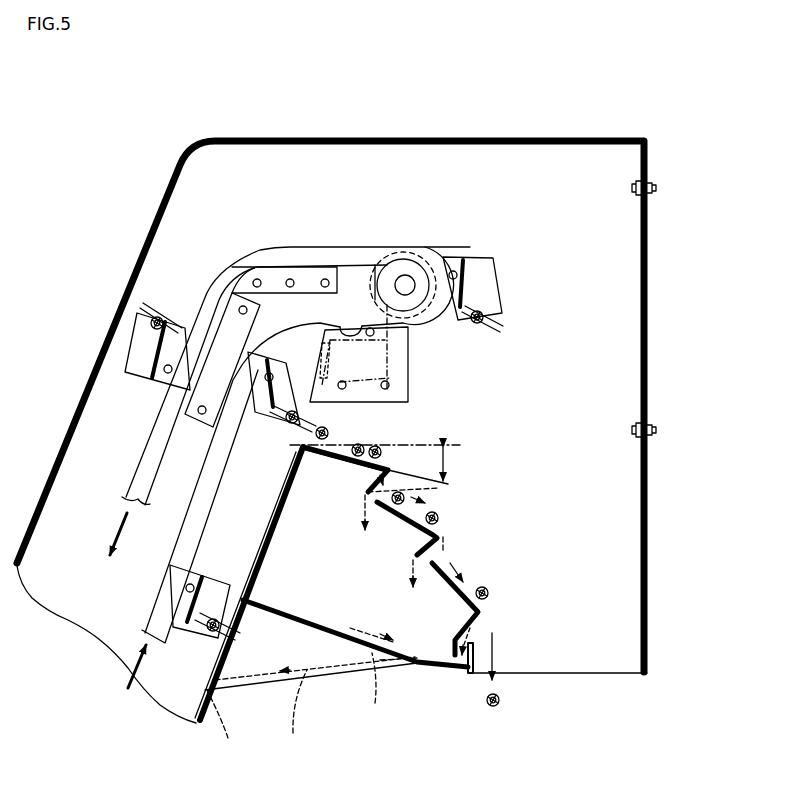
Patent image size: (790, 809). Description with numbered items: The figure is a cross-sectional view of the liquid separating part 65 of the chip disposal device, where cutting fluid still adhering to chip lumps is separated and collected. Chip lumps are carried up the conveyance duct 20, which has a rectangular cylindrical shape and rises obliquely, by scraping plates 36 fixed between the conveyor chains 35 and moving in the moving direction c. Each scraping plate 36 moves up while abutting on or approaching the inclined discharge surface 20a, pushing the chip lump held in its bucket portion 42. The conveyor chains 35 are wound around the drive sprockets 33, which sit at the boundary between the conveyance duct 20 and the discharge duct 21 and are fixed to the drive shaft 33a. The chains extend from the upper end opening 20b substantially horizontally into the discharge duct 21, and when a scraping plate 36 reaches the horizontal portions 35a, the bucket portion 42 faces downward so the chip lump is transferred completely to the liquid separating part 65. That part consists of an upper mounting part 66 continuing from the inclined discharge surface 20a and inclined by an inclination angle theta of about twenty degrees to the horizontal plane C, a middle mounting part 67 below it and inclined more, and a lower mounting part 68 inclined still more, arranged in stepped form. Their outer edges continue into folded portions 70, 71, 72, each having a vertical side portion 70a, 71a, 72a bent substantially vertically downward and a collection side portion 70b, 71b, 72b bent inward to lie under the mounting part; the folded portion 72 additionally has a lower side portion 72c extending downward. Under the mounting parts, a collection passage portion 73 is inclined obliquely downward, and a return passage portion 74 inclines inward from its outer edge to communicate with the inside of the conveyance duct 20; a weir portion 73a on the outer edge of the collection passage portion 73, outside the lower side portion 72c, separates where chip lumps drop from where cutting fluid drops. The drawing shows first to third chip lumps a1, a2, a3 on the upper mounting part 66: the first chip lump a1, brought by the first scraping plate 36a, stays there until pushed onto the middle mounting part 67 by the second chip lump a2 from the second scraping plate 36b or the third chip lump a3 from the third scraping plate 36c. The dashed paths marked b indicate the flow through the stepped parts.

The conveyance duct 20 is at (130, 248).
The inclined discharge surface 20a is at (268, 518).
The upper end opening 20b is at (298, 452).
The discharge duct 21 is at (600, 680).
The drive sprocket 33 is at (377, 280).
The drive shaft 33a is at (406, 276).
The conveyor chain 35 is at (272, 240).
The horizontal portion 35a is at (345, 325).
The scraping plate 36 is at (395, 355).
The first scraping plate 36a is at (128, 337).
The second scraping plate 36b is at (505, 258).
The third scraping plate 36c is at (262, 435).
The bucket portion 42 is at (292, 352).
The liquid separating part 65 is at (495, 527).
The upper mounting part 66 is at (348, 456).
The middle mounting part 67 is at (445, 530).
The lower mounting part 68 is at (456, 600).
The folded portion 70 is at (359, 524).
The vertical side portion 70a is at (372, 492).
The collection side portion 70b is at (385, 505).
The folded portion 71 is at (377, 554).
The vertical side portion 71a is at (420, 545).
The collection side portion 71b is at (430, 560).
The folded portion 72 is at (501, 656).
The vertical side portion 72a is at (487, 612).
The collection side portion 72b is at (480, 634).
The lower side portion 72c is at (452, 655).
The collection passage portion 73 is at (290, 610).
The weir portion 73a is at (471, 676).
The return passage portion 74 is at (340, 672).
The first chip lump a1 is at (381, 449).
The second chip lump a2 is at (362, 447).
The third chip lump a3 is at (328, 437).
The load transmission path b is at (335, 621).
The moving direction c is at (120, 528).
The horizontal plane C is at (450, 445).
The inclination angle theta is at (455, 463).